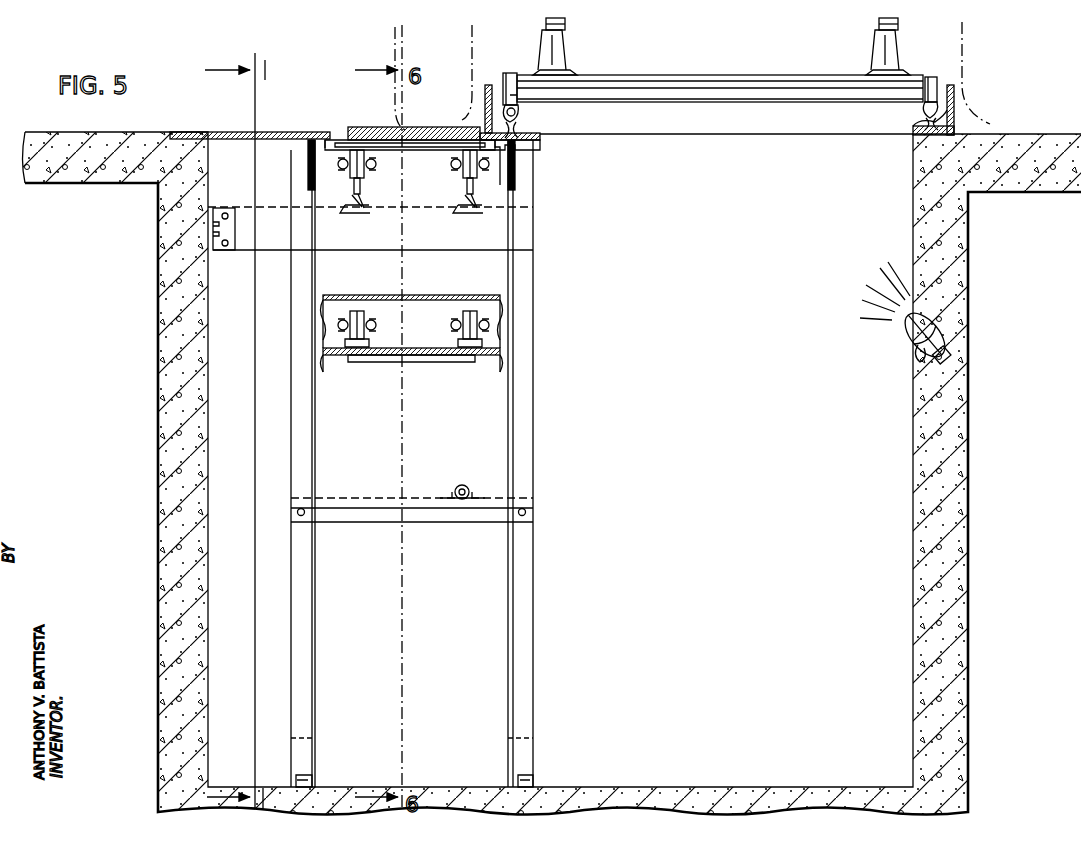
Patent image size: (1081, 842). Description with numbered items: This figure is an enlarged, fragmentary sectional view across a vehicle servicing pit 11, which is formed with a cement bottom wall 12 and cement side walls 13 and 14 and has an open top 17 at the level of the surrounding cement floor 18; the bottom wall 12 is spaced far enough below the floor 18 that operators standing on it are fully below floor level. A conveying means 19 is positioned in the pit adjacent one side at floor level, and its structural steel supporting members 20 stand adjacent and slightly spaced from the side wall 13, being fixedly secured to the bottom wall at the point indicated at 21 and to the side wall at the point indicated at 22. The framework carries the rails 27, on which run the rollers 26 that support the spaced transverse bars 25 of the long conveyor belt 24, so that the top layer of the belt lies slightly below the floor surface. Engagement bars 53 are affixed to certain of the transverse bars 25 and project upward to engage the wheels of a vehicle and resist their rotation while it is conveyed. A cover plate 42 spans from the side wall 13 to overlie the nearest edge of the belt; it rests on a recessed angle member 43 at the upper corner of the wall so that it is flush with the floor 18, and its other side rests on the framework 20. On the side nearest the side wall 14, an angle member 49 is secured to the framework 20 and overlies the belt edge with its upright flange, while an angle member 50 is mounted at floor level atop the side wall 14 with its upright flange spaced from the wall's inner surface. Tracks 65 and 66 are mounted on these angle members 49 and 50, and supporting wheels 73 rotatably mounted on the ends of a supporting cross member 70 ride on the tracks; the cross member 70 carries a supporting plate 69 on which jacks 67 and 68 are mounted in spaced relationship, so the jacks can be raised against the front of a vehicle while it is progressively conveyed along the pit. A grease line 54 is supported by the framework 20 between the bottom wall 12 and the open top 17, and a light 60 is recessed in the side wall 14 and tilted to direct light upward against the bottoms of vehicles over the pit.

The pit 11 is at (885, 714).
The cement bottom wall 12 is at (823, 782).
The cement side wall 13 is at (163, 535).
The cement side wall 14 is at (950, 440).
The open top 17 is at (803, 135).
The cement floor 18 is at (55, 160).
The conveying means 19 is at (357, 463).
The structural steel supporting members 20 is at (355, 505).
The floor securing point 21 is at (314, 772).
The side wall securing point 22 is at (212, 230).
The conveyor belt 24 is at (455, 190).
The transverse bars 25 is at (495, 152).
The rollers 26 is at (352, 198).
The rails 27 is at (364, 200).
The cover plate 42 is at (252, 130).
The recessed angle member 43 is at (175, 180).
The angle member 49 is at (488, 90).
The angle member 50 is at (952, 92).
The engagement bars 53 is at (395, 128).
The grease line 54 is at (458, 486).
The lights 60 is at (903, 345).
The track 65 is at (520, 112).
The track 66 is at (922, 112).
The jack 67 is at (568, 62).
The jack 68 is at (878, 60).
The supporting plate 69 is at (680, 76).
The supporting cross member 70 is at (787, 100).
The supporting wheels 73 is at (512, 85).